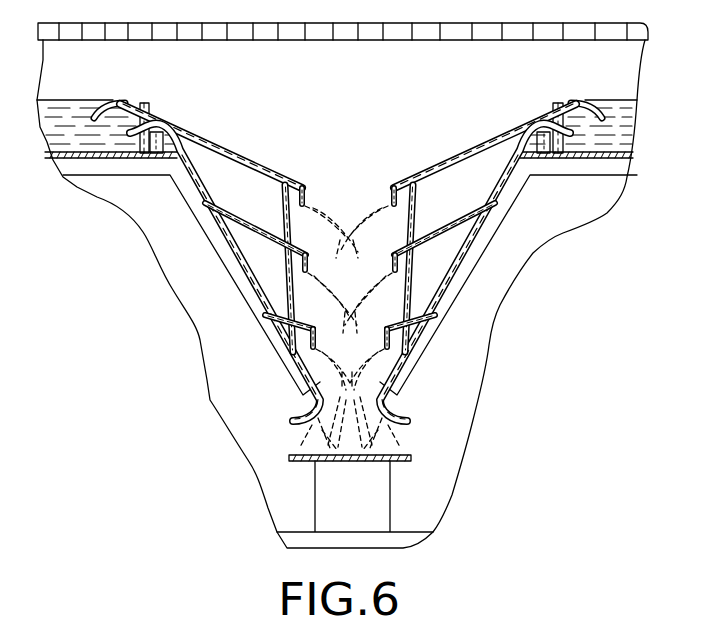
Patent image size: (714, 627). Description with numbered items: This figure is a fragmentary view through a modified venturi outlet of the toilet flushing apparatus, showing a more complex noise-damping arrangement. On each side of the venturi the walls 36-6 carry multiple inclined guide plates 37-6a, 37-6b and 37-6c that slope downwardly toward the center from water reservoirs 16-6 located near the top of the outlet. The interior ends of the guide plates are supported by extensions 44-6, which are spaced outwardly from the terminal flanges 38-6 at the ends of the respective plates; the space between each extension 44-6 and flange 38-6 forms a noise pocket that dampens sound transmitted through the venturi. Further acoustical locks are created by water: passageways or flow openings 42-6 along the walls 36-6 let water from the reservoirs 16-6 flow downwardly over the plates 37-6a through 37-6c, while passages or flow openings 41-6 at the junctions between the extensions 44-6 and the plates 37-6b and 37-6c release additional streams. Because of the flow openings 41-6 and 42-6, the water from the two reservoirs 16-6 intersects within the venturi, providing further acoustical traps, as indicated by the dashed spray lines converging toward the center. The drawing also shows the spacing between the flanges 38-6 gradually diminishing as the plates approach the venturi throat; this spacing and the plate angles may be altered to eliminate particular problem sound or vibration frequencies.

The reservoir 16-6 is at (77, 107).
The wall 36-6 is at (213, 210).
The guide plate 37-6a is at (200, 135).
The guide plate 37-6b is at (217, 217).
The guide plate 37-6c is at (293, 347).
The terminal flange 38-6 is at (385, 200).
The flow opening 41-6 is at (322, 239).
The flow opening 42-6 is at (217, 207).
The extension 44-6 is at (282, 205).